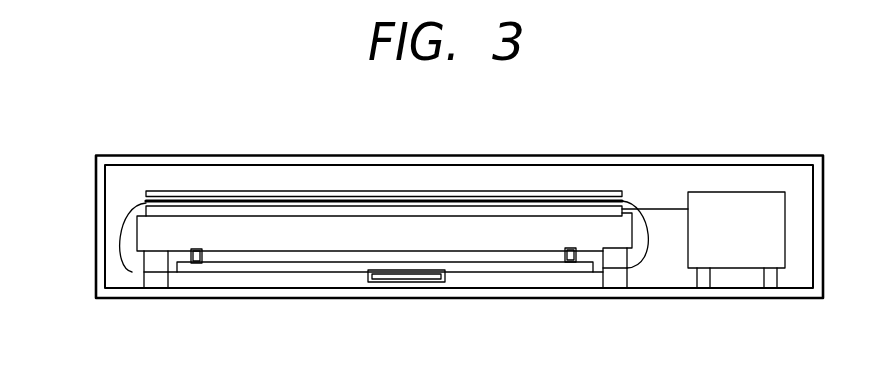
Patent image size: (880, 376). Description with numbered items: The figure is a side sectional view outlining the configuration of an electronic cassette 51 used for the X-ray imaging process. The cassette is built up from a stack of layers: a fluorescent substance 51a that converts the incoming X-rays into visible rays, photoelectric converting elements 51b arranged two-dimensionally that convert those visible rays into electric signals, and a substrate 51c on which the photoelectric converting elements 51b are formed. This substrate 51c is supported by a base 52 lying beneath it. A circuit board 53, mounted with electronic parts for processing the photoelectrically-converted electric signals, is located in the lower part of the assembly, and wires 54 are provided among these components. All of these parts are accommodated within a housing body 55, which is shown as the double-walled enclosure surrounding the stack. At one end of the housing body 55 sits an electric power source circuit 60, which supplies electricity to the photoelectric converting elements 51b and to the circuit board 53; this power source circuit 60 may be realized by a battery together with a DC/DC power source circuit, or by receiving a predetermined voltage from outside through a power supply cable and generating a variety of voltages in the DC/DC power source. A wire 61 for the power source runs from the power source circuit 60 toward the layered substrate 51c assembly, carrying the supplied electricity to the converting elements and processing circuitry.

The electronic cassette 51 is at (344, 161).
The fluorescent substance 51a is at (175, 190).
The photoelectric converting elements 51b is at (248, 199).
The substrate 51c is at (316, 212).
The base 52 is at (349, 232).
The circuit board 53 is at (454, 271).
The wires 54 is at (131, 273).
The housing body 55 is at (96, 246).
The electric power source circuit 60 is at (741, 266).
The wire for the power source 61 is at (673, 209).